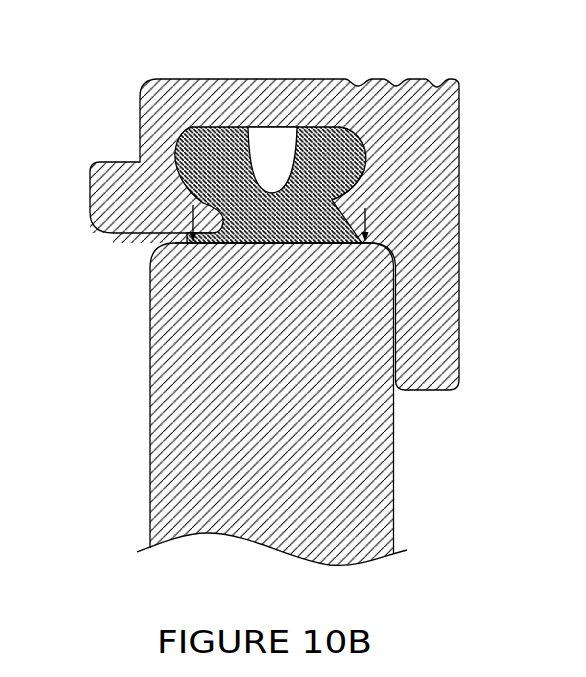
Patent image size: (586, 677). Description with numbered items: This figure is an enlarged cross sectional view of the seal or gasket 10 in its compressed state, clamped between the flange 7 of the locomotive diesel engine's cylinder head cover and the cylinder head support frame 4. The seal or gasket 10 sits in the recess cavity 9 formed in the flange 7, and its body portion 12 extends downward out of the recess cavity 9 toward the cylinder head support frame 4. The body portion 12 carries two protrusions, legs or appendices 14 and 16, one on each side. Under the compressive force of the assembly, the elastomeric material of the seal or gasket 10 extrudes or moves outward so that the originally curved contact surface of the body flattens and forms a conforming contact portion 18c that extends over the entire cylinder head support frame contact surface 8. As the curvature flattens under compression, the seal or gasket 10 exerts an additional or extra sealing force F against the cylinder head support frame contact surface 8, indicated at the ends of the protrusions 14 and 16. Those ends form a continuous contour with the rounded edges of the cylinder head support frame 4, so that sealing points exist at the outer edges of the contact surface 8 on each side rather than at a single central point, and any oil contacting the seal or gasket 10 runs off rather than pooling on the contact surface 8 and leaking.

The cylinder head support frame 4 is at (330, 420).
The flange 7 is at (142, 82).
The cylinder head support frame contact surface 8 is at (274, 257).
The recess cavity 9 is at (284, 132).
The seal or gasket 10 is at (231, 191).
The body portion 12 is at (275, 203).
The protrusion/leg/appendix 14 is at (188, 240).
The protrusion/leg/appendix 16 is at (368, 236).
The conforming contact portion 18c is at (258, 246).
The sealing force F is at (192, 225).